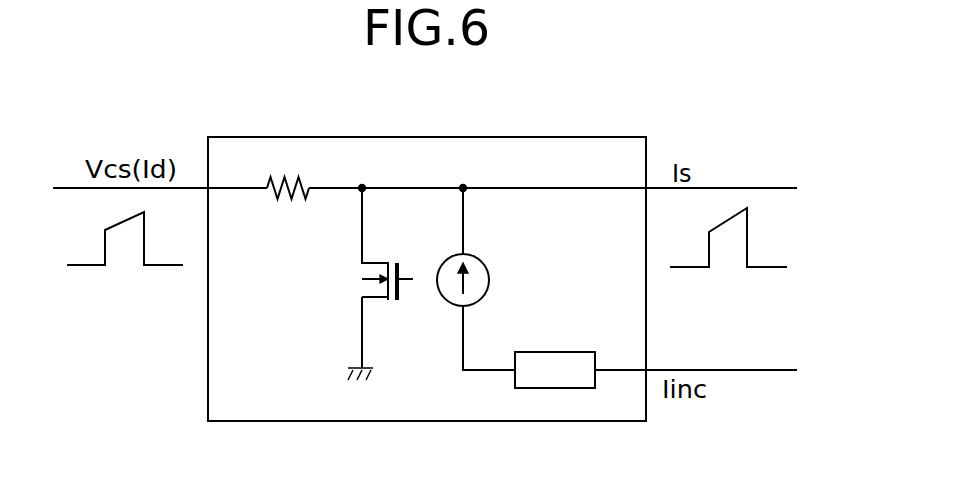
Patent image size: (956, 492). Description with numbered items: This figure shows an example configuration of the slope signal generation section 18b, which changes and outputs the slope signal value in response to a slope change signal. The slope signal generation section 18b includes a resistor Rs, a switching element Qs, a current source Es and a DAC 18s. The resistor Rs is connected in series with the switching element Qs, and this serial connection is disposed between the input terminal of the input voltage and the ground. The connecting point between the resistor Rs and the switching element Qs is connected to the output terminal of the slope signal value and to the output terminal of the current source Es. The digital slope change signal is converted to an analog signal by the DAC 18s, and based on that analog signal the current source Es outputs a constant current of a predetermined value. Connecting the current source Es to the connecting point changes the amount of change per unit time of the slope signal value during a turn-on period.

The slope signal generation section 18b is at (363, 137).
The DAC 18s is at (553, 352).
The resistor Rs is at (288, 207).
The switching element Qs is at (380, 283).
The current source Es is at (476, 278).